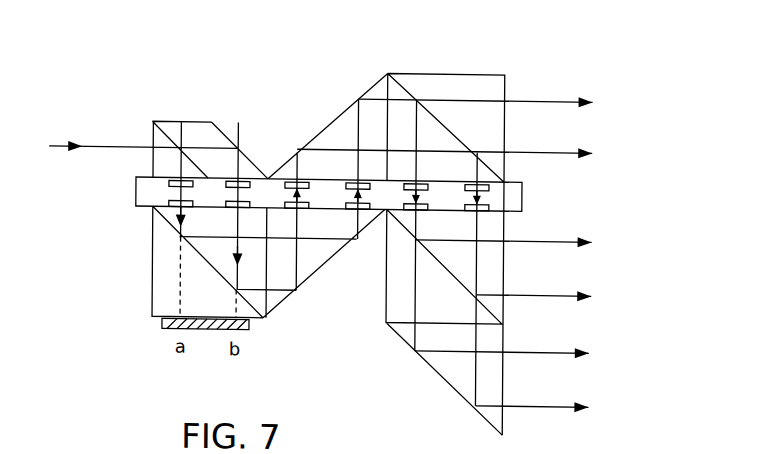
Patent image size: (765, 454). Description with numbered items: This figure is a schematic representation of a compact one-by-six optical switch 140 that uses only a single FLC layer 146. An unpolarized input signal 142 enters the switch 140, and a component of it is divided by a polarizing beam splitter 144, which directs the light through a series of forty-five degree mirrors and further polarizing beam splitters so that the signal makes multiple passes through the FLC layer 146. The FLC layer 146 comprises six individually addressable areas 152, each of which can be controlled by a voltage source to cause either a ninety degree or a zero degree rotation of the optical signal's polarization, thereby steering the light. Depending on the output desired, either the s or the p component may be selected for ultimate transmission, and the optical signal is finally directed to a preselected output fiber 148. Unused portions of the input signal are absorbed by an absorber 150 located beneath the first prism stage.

The beam splitter prism assembly 140 is at (442, 60).
The unpolarized input signal 142 is at (104, 144).
The polarizing beam splitter 144 is at (184, 132).
The FLC layer 146 is at (134, 196).
The output fiber 148 is at (531, 99).
The absorber 150 is at (161, 323).
The individually addressable areas 152 is at (160, 186).